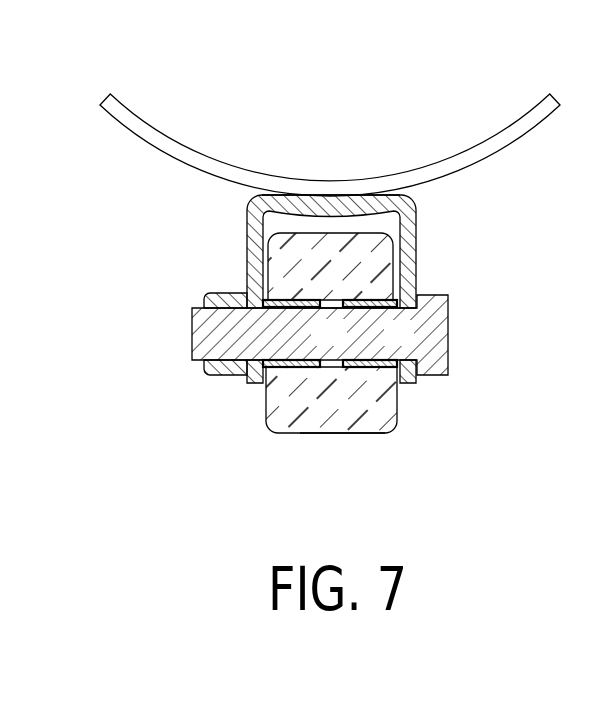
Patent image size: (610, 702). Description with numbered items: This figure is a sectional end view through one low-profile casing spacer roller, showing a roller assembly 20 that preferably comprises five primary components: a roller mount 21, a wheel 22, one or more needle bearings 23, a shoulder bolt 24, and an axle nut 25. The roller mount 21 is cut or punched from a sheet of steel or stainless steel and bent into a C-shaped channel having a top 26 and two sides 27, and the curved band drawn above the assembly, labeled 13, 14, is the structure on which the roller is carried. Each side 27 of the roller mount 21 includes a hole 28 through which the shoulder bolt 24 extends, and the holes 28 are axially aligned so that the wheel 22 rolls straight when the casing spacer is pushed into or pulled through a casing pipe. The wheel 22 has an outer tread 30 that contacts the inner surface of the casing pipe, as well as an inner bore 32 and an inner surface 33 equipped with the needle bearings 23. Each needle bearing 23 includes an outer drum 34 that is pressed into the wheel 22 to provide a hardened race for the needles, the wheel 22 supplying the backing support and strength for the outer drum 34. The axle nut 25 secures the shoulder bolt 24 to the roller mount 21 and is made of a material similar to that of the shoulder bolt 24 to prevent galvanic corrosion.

The rail 13 is at (330, 121).
The rail 14 is at (162, 145).
The roller assembly 20 is at (447, 415).
The roller mount 21 is at (344, 281).
The wheel 22 is at (267, 412).
The needle bearing 23 is at (283, 307).
The shoulder bolt 24 is at (370, 335).
The axle nut 25 is at (218, 293).
The top 26 is at (338, 205).
The side 27 is at (253, 234).
The hole 28 is at (237, 332).
The outer tread 30 is at (378, 428).
The inner bore 32 is at (298, 377).
The inner surface 33 is at (338, 328).
The outer drum 34 is at (298, 300).